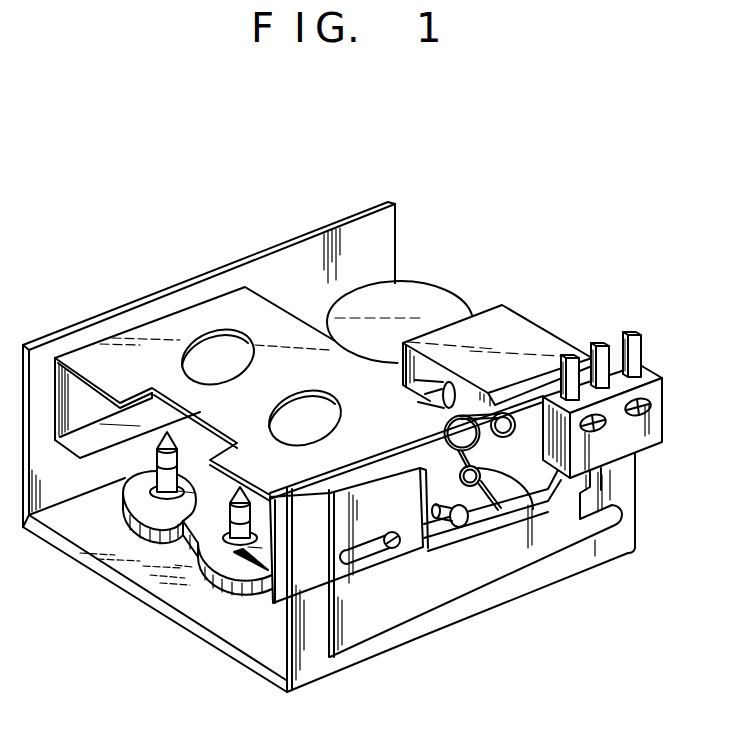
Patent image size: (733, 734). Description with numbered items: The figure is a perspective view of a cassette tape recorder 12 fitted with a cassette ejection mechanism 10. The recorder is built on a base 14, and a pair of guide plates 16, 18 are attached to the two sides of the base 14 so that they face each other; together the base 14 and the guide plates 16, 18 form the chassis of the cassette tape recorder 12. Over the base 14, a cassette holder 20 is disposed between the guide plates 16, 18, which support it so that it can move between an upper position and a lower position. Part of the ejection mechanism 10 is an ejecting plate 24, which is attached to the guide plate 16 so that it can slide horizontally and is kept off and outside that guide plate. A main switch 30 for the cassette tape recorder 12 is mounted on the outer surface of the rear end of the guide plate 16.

The cassette ejection mechanism 10 is at (233, 447).
The cassette tape recorder 12 is at (197, 262).
The base 14 is at (87, 547).
The guide plate 16 is at (318, 665).
The guide plate 18 is at (396, 222).
The cassette holder 20 is at (260, 321).
The ejecting plate 24 is at (430, 612).
The main switch 30 is at (655, 411).